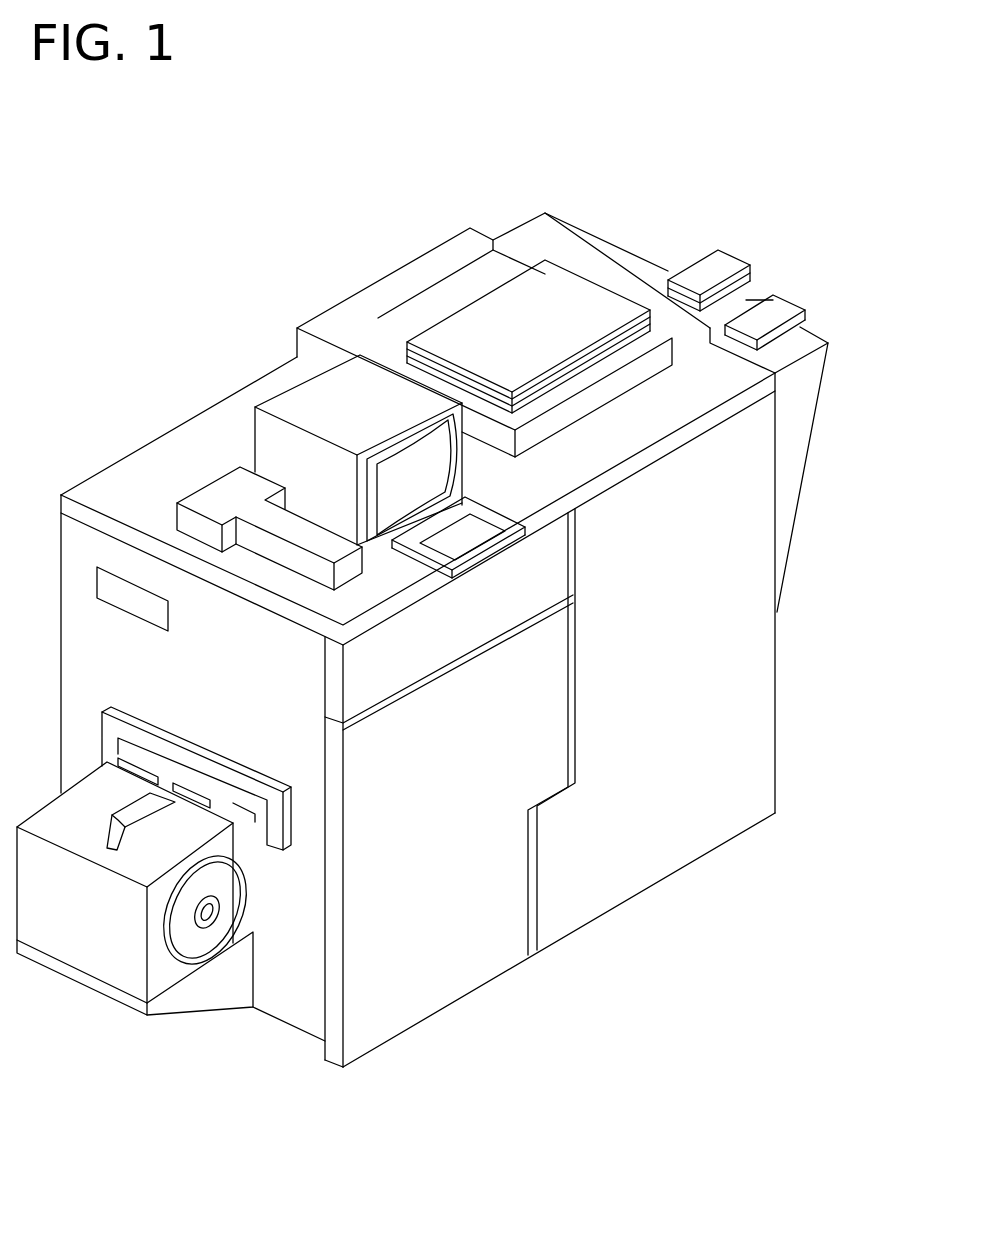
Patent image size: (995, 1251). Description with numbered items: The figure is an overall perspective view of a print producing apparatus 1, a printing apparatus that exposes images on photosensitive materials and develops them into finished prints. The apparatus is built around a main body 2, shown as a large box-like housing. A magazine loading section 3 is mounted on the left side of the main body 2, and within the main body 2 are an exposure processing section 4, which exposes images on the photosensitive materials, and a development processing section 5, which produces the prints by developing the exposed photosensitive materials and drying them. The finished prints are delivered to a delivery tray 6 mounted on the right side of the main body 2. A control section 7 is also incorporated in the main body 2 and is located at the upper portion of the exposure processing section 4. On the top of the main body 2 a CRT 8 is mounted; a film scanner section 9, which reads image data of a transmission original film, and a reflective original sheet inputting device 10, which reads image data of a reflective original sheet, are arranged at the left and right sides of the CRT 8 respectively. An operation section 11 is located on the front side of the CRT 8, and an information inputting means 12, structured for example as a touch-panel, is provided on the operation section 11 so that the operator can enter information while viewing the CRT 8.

The print producing apparatus 1 is at (70, 291).
The main body 2 is at (281, 1007).
The magazine loading section 3 is at (65, 938).
The exposure processing section 4 is at (432, 957).
The development processing section 5 is at (753, 637).
The delivery tray 6 is at (793, 475).
The control section 7 is at (383, 680).
The CRT 8 is at (297, 393).
The film scanner section 9 is at (220, 493).
The reflective original sheet inputting device 10 is at (565, 298).
The operation section 11 is at (493, 503).
The information inputting means 12 is at (462, 530).